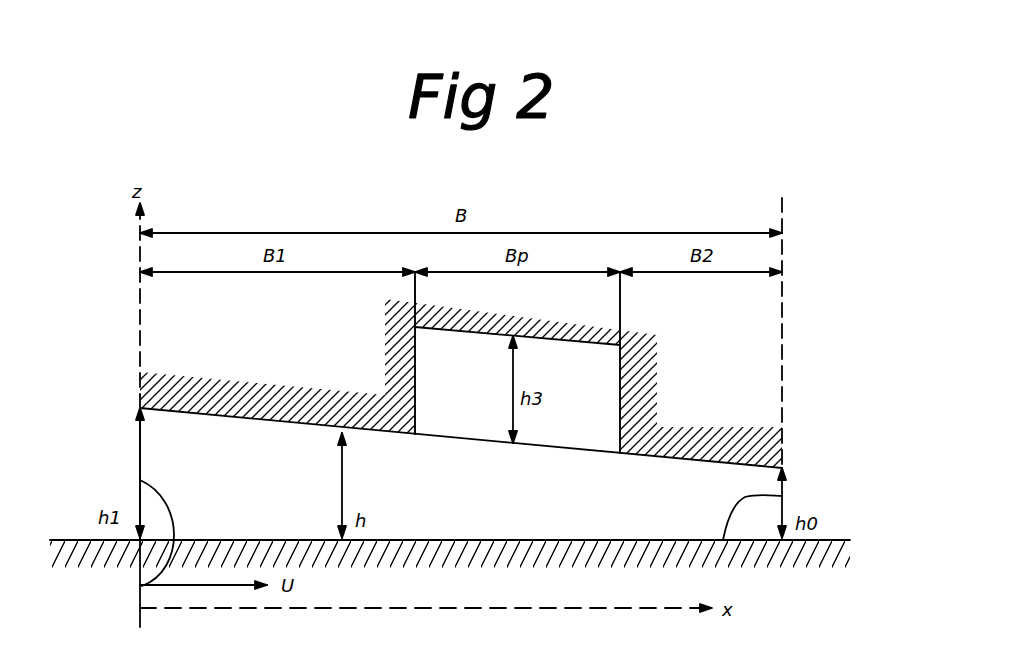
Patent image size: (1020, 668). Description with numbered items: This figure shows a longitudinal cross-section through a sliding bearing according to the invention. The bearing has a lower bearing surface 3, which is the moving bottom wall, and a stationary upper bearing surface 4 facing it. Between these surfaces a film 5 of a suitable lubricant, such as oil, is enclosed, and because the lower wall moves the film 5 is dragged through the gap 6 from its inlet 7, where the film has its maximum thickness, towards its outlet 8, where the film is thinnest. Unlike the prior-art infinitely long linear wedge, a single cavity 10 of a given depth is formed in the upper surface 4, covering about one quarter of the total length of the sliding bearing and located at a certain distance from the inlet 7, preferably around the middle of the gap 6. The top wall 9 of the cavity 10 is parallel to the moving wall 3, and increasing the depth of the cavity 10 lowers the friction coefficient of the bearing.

The lower bearing surface 3 is at (786, 493).
The upper bearing surface 4 is at (203, 415).
The lubricant film 5 is at (423, 477).
The gap 6 is at (275, 460).
The inlet 7 is at (143, 587).
The outlet 8 is at (783, 502).
The top wall 9 is at (575, 341).
The cavity 10 is at (600, 388).